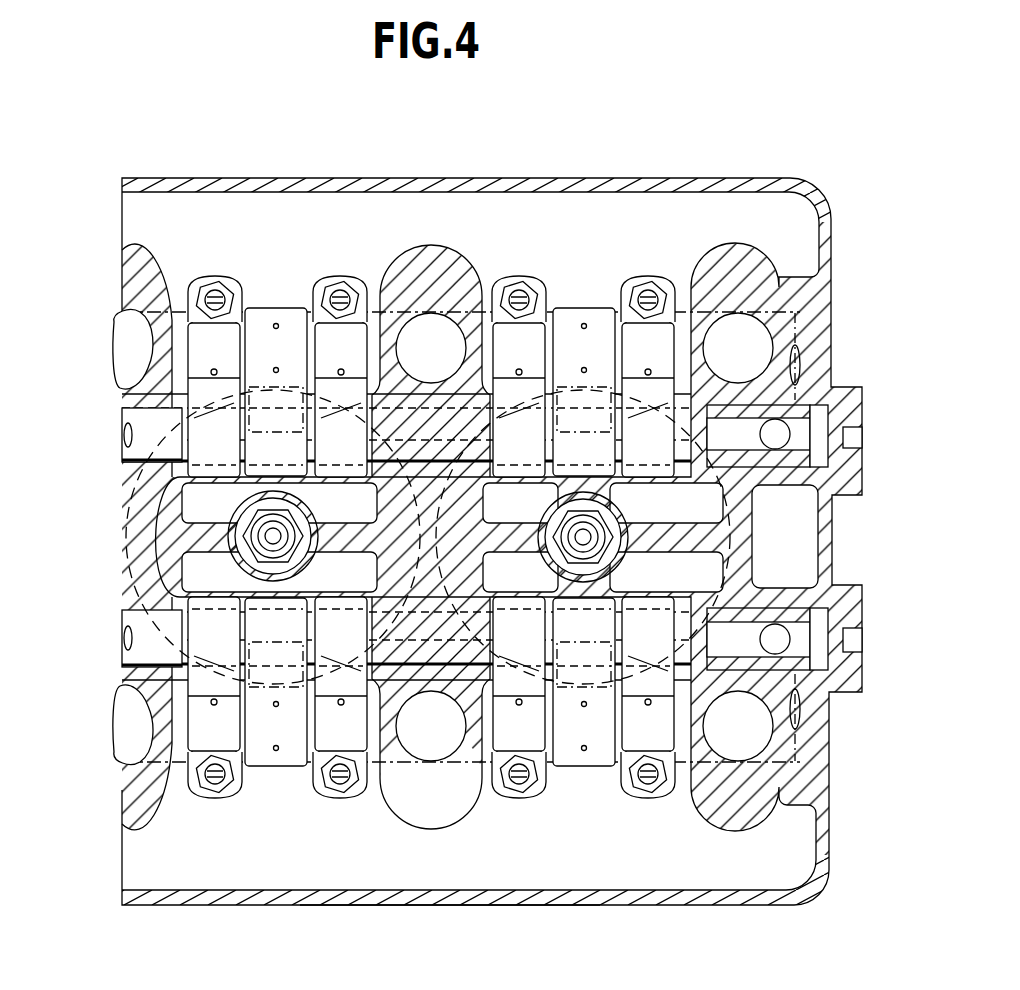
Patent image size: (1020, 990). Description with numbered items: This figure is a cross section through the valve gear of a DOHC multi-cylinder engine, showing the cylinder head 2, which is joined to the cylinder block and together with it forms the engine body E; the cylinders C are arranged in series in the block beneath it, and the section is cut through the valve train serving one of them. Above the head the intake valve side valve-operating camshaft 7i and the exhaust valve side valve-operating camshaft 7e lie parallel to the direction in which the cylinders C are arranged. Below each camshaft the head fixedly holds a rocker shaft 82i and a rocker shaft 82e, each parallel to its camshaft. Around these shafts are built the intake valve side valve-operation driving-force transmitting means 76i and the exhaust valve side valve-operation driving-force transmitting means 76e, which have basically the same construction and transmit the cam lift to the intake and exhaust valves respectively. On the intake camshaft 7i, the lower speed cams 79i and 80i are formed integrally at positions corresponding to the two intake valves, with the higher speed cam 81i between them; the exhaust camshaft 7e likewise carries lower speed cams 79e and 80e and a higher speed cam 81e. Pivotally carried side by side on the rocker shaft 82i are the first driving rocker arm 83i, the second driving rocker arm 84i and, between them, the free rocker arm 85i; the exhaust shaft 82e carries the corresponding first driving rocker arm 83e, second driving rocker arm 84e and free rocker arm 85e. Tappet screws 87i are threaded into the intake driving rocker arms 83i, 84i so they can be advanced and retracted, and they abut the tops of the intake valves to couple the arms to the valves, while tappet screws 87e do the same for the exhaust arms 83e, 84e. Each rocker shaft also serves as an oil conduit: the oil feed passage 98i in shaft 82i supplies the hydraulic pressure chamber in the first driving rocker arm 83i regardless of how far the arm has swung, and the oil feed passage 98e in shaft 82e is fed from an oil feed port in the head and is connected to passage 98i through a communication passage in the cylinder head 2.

The cylinder head 2 is at (375, 895).
The engine body E is at (485, 906).
The cylinders C is at (140, 492).
The intake valve side valve-operating camshaft 7i is at (777, 300).
The exhaust valve side valve-operating camshaft 7e is at (777, 783).
The intake valve side valve-operation driving-force transmitting means 76i is at (487, 290).
The exhaust valve side valve-operation driving-force transmitting means 76e is at (517, 841).
The lower speed cam 79i is at (680, 295).
The lower speed cam 79e is at (673, 783).
The lower speed cam 80i is at (495, 282).
The lower speed cam 80e is at (540, 793).
The higher speed cam 81i is at (597, 300).
The higher speed cam 81e is at (596, 772).
The rocker shaft 82i is at (122, 455).
The rocker shaft 82e is at (122, 662).
The first driving rocker arm 83i is at (653, 470).
The first driving rocker arm 83e is at (640, 617).
The second driving rocker arm 84i is at (487, 433).
The second driving rocker arm 84e is at (433, 578).
The free rocker arm 85i is at (548, 493).
The free rocker arm 85e is at (565, 617).
The tappet screws 87i is at (525, 278).
The tappet screws 87e is at (513, 790).
The oil feed passage 98i is at (785, 510).
The oil feed passage 98e is at (785, 562).